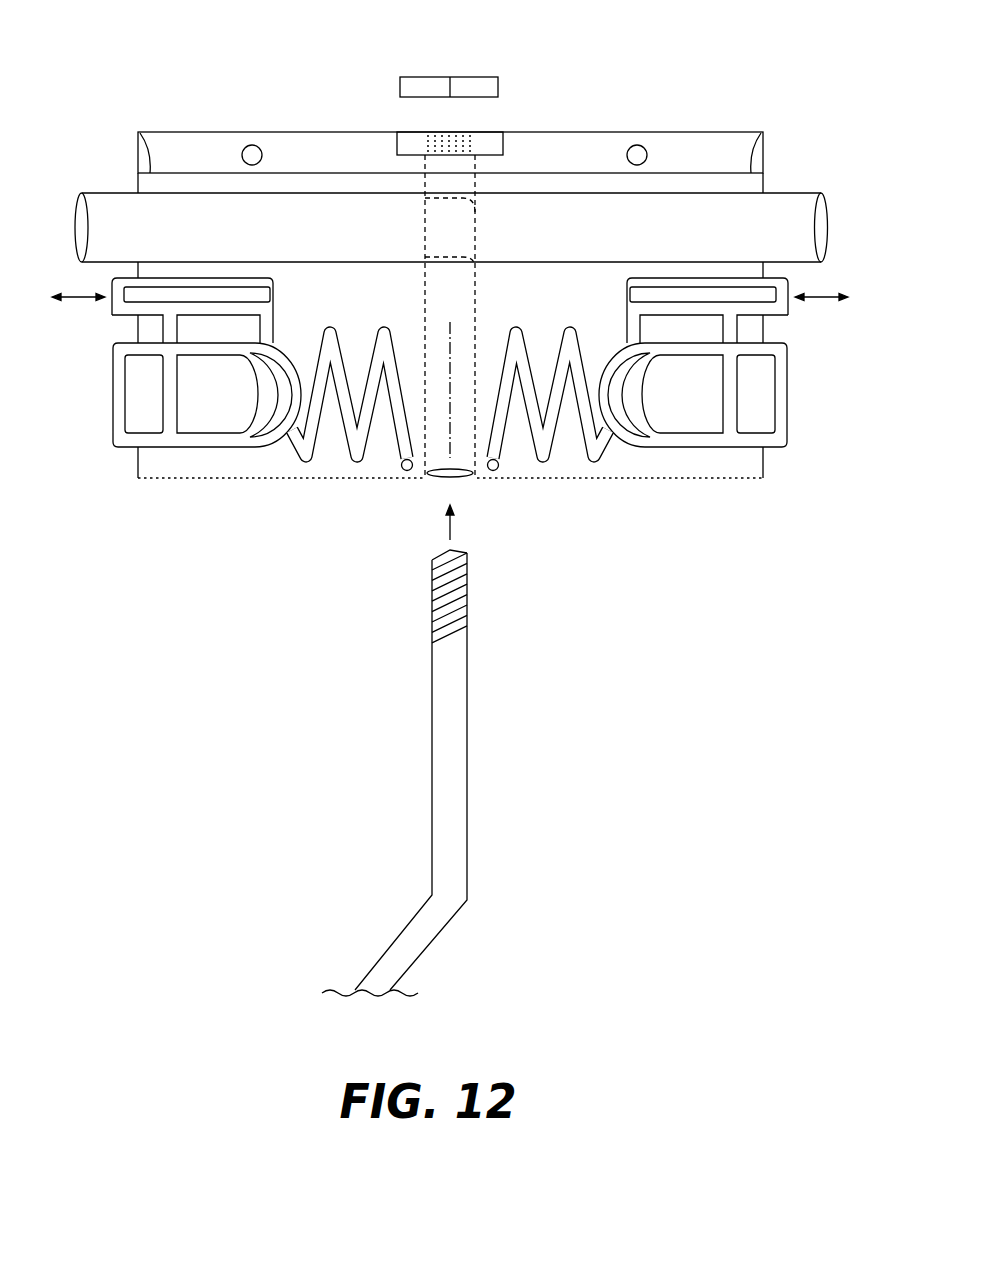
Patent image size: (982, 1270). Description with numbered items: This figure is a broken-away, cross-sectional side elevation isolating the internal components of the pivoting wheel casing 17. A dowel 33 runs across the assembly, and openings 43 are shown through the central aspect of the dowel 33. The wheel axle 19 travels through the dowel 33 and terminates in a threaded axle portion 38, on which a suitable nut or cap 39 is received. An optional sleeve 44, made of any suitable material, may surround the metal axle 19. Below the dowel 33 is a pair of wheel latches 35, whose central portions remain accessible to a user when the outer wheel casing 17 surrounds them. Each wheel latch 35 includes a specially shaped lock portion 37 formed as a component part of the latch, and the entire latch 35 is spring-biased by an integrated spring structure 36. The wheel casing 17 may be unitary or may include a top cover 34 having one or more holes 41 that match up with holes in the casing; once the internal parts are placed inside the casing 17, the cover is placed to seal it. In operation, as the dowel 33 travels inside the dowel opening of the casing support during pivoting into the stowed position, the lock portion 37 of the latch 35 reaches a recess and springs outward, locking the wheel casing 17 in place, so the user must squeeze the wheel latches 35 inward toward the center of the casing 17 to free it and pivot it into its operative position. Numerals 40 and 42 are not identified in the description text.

The pivoting wheel casing 17 is at (212, 465).
The wheel axle 19 is at (458, 740).
The dowel 33 is at (107, 202).
The top cover 34 is at (745, 140).
The wheel latch 35 is at (112, 430).
The integrated spring structure 36 is at (360, 468).
The lock portion 37 is at (120, 317).
The threaded axle portion 38 is at (468, 588).
The nut or cap 39 is at (427, 80).
The window 40 is at (496, 136).
The holes 41 is at (253, 154).
The end portion 42 is at (185, 182).
The openings 43 is at (478, 215).
The sleeve 44 is at (460, 470).